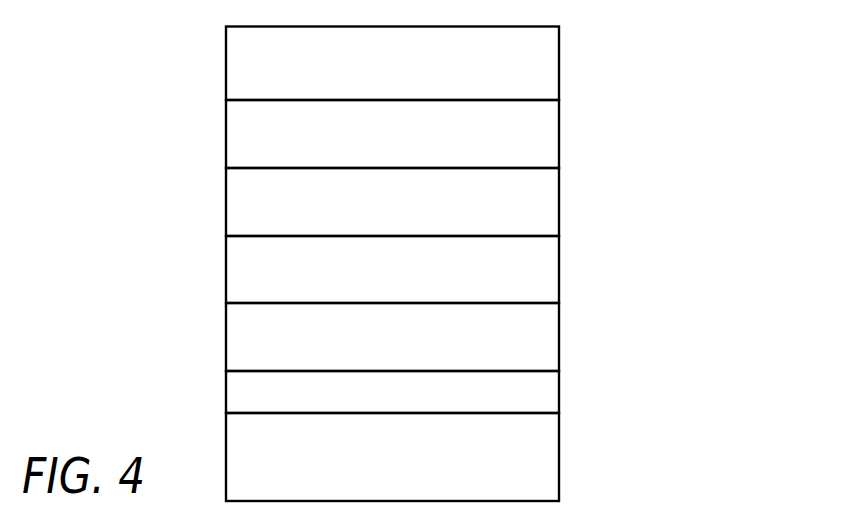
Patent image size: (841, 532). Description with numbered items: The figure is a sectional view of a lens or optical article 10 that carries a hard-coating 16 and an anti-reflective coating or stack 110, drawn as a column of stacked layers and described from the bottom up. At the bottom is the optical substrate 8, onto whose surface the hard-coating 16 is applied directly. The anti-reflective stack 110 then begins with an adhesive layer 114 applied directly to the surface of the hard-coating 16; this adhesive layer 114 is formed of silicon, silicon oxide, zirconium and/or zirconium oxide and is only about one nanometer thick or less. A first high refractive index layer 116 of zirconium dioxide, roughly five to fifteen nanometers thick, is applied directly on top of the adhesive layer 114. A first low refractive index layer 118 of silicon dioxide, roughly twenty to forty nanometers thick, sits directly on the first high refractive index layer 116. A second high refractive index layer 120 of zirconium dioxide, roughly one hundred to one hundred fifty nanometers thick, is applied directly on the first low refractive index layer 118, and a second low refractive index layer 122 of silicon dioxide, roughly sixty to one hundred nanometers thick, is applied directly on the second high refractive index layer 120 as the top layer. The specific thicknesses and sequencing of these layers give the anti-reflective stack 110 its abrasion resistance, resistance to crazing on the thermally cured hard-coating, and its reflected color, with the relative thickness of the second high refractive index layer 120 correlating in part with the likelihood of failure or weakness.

The optical article 10 is at (108, 174).
The anti-reflective stack 110 is at (747, 174).
The second low refractive index layer 122 is at (559, 64).
The second high refractive index layer 120 is at (559, 133).
The first low refractive index layer 118 is at (559, 200).
The first high refractive index layer 116 is at (559, 266).
The adhesive layer 114 is at (559, 334).
The hard-coating 16 is at (559, 389).
The optical substrate 8 is at (559, 449).